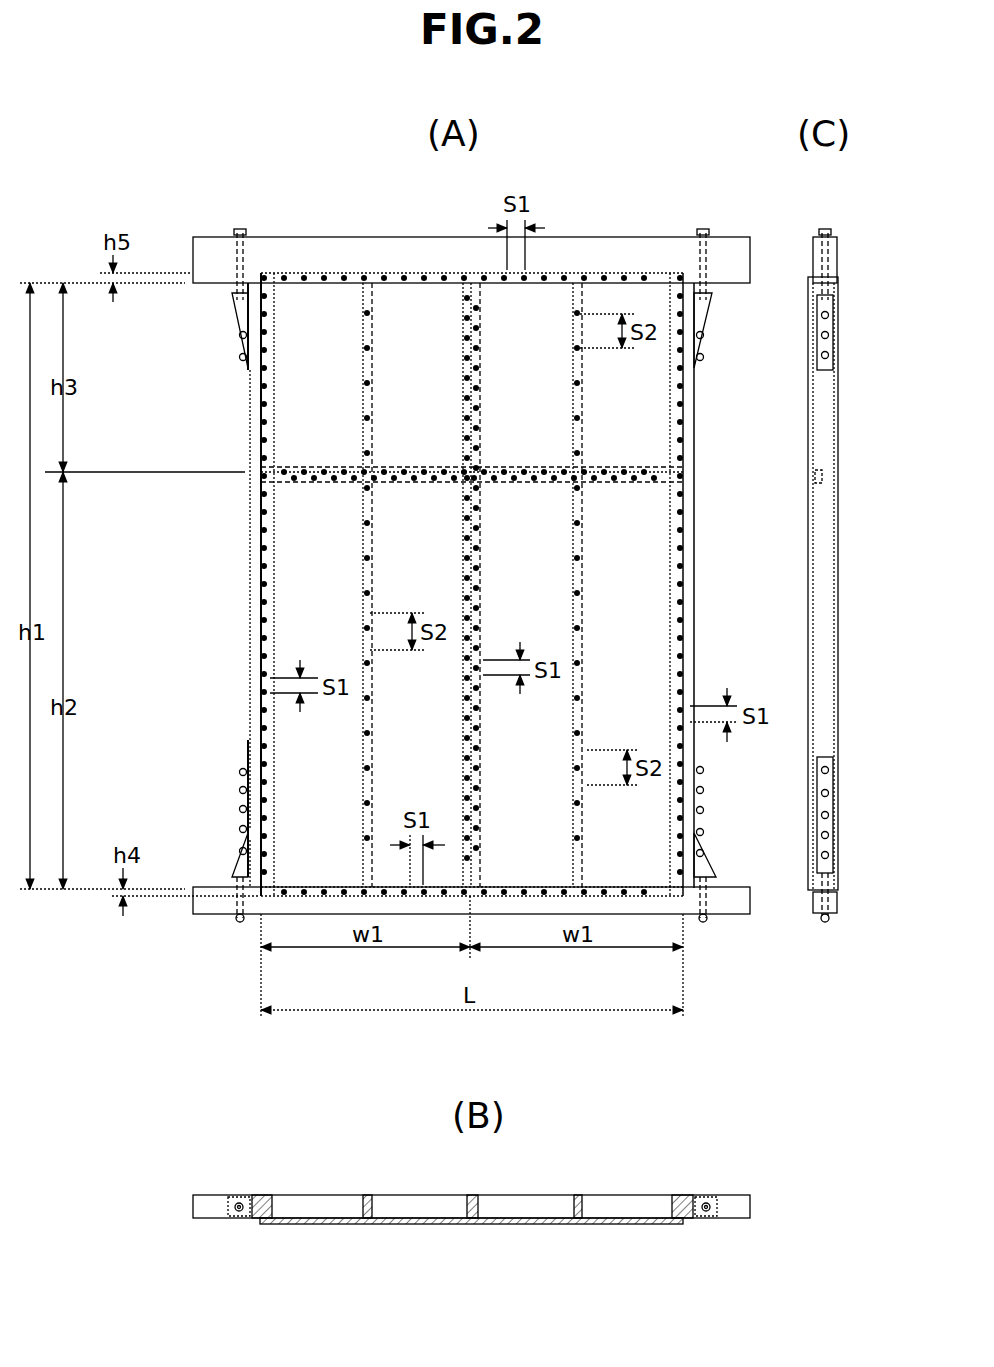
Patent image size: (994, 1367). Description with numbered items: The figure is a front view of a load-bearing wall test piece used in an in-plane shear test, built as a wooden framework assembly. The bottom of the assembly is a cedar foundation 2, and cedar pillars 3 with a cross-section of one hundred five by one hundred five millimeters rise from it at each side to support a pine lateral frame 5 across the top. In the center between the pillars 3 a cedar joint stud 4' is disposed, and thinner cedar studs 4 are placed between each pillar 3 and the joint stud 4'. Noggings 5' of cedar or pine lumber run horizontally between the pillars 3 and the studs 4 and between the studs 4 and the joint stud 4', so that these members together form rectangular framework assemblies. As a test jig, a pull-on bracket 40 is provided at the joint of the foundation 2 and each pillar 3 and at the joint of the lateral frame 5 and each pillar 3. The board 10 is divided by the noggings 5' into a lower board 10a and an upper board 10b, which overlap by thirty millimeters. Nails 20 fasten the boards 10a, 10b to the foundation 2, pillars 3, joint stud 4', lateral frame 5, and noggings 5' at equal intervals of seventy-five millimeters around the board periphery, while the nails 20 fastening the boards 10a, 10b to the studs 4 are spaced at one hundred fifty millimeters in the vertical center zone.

The foundation 2 is at (305, 915).
The pillars 3 is at (690, 603).
The studs 4 is at (499, 750).
The joint stud 4' is at (500, 750).
The lateral frame 5 is at (502, 243).
The noggings 5' is at (541, 510).
The board 10 is at (138, 455).
The lower board 10a is at (288, 492).
The upper board 10b is at (270, 358).
The nails 20 is at (630, 276).
The pull-on bracket 40 is at (222, 312).